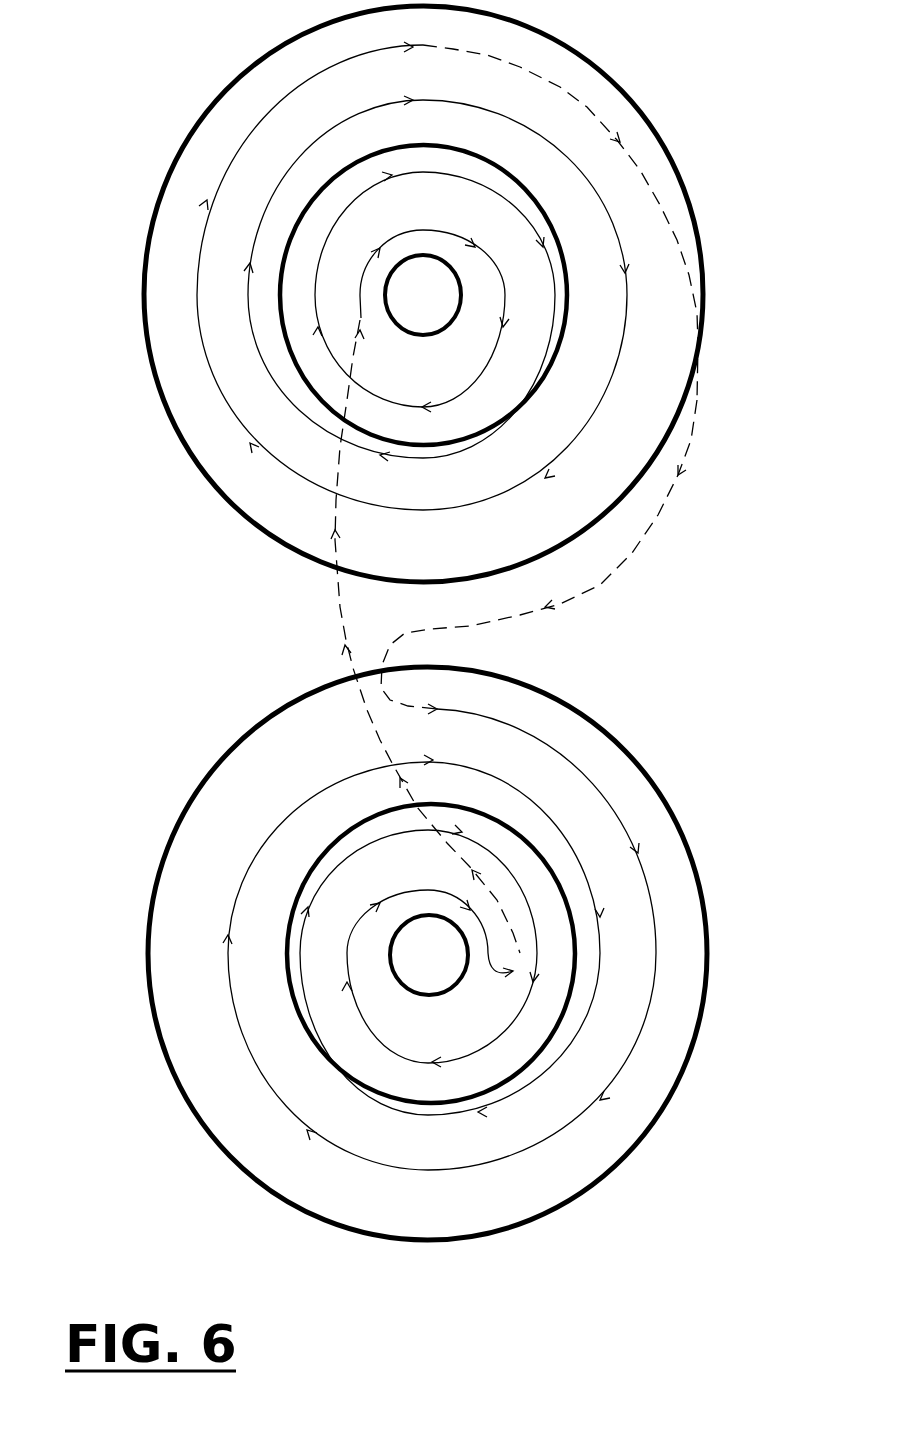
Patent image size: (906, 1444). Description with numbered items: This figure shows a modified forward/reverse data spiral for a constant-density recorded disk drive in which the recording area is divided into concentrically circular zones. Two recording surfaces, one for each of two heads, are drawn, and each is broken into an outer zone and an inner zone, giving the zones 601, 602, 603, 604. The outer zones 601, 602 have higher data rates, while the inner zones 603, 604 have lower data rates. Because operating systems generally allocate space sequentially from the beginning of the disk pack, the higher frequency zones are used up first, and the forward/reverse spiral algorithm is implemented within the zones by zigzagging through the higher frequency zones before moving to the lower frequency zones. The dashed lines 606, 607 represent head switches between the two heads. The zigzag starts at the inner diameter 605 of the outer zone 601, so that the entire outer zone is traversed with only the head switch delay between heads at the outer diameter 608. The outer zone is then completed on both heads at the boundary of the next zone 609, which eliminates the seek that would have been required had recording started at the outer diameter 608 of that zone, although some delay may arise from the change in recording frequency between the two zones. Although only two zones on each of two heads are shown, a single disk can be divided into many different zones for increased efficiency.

The outer zone 601 is at (408, 85).
The outer zone 602 is at (410, 697).
The inner zone 603 is at (408, 214).
The inner zone 604 is at (410, 858).
The inner diameter of the outer zone 605 is at (421, 146).
The head switch 606 is at (338, 612).
The head switch 607 is at (632, 556).
The outer diameter 608 is at (623, 90).
The boundary of the next zone 609 is at (532, 845).